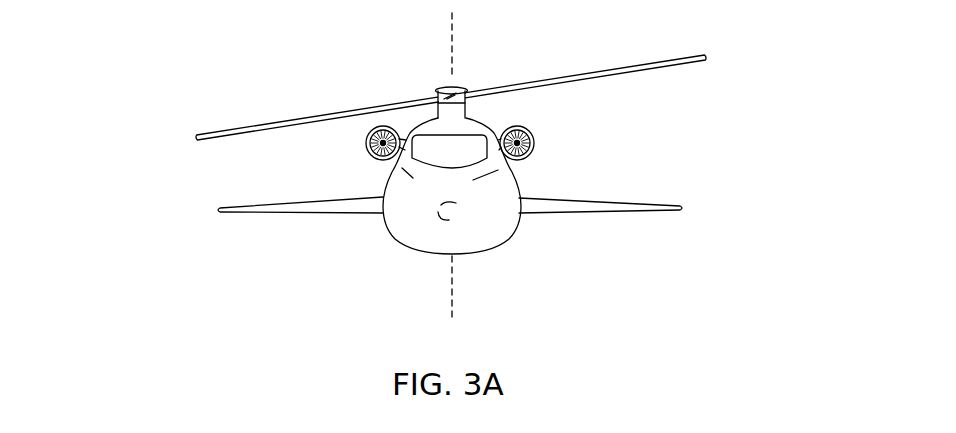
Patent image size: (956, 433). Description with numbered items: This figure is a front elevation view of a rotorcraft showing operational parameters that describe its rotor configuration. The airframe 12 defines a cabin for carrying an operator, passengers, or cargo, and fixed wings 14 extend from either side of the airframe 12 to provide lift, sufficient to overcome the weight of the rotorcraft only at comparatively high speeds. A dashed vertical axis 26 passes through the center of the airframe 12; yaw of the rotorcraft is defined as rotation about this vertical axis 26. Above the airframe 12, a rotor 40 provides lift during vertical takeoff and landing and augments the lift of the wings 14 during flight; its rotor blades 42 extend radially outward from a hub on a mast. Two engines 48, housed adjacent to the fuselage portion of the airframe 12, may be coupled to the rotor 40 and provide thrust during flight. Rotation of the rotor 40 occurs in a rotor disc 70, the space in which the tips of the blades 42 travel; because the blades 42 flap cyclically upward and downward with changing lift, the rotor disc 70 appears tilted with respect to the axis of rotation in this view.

The airframe 12 is at (410, 232).
The fixed wings 14 is at (312, 212).
The vertical axis 26 is at (455, 33).
The rotor 40 is at (400, 80).
The rotor blades 42 is at (262, 125).
The engines 48 is at (366, 150).
The rotor disc 70 is at (728, 50).